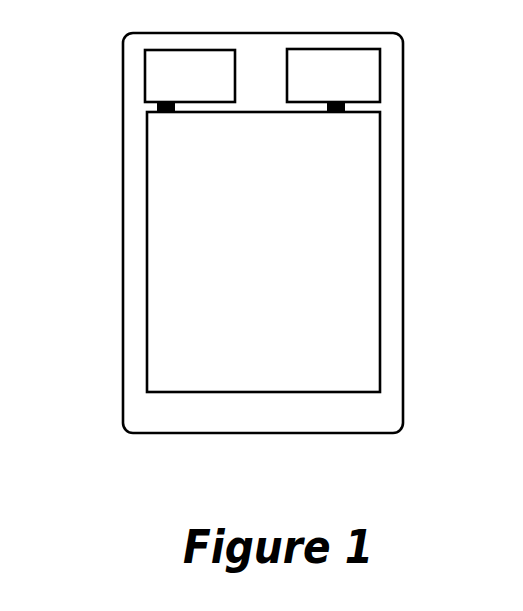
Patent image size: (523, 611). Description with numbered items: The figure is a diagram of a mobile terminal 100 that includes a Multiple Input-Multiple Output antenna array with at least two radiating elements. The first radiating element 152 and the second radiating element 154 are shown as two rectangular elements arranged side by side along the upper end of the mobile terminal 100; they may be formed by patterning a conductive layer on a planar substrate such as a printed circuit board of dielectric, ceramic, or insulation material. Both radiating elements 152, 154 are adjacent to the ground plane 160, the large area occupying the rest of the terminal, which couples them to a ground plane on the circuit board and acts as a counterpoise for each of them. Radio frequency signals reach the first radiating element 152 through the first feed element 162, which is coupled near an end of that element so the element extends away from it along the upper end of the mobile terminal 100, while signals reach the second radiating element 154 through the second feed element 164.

The mobile terminal 100 is at (123, 166).
The first radiating element 152 is at (163, 73).
The second radiating element 154 is at (355, 67).
The ground plane 160 is at (172, 292).
The first feed element 162 is at (173, 114).
The second feed element 164 is at (338, 114).